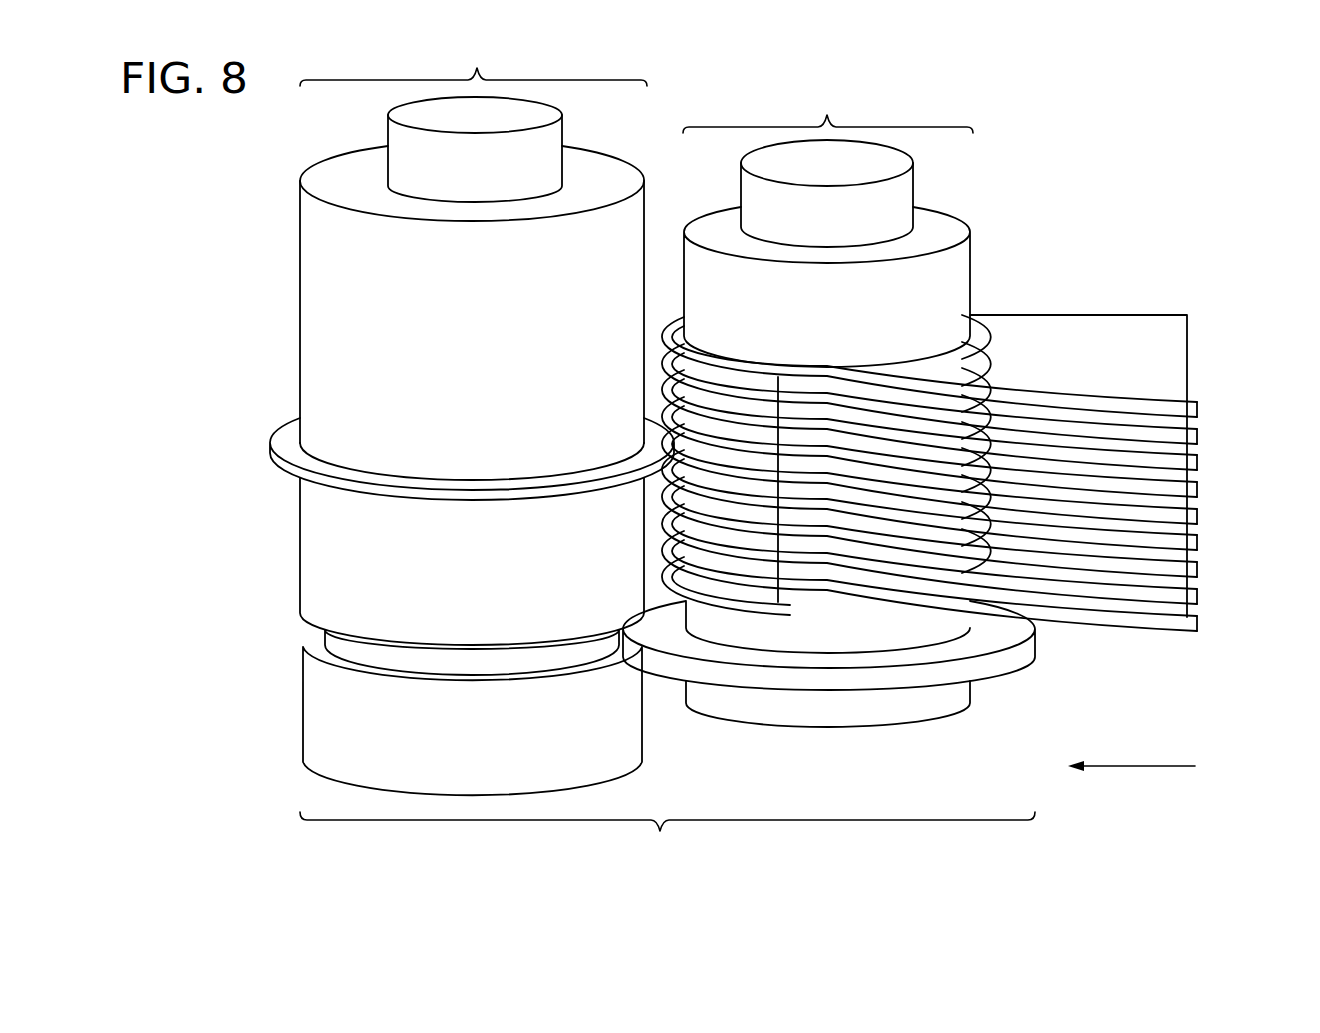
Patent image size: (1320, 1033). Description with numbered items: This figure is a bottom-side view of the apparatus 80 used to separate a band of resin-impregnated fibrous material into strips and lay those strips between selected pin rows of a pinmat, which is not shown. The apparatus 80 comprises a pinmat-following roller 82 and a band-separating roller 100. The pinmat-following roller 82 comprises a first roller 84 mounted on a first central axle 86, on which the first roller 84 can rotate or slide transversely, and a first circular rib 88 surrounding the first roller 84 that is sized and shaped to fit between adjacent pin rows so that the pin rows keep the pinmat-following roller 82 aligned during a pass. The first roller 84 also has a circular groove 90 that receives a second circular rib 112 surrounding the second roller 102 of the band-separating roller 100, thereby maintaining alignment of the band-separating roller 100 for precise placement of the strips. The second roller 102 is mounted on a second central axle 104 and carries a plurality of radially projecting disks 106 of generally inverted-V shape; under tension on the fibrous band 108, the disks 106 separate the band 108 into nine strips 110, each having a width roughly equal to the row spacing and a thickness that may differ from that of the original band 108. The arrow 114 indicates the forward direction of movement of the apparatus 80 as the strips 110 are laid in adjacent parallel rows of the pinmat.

The apparatus 80 is at (667, 837).
The pinmat-following roller 82 is at (473, 416).
The first roller 84 is at (300, 250).
The first central axle 86 is at (550, 142).
The first circular rib 88 is at (295, 478).
The circular groove 90 is at (310, 627).
The band-separating roller 100 is at (828, 369).
The second roller 102 is at (957, 278).
The second central axle 104 is at (903, 194).
The radially projecting disks 106 is at (670, 340).
The fibrous band 108 is at (1146, 326).
The strips 110 is at (1199, 409).
The second circular rib 112 is at (1010, 666).
The arrow 114 is at (1154, 760).